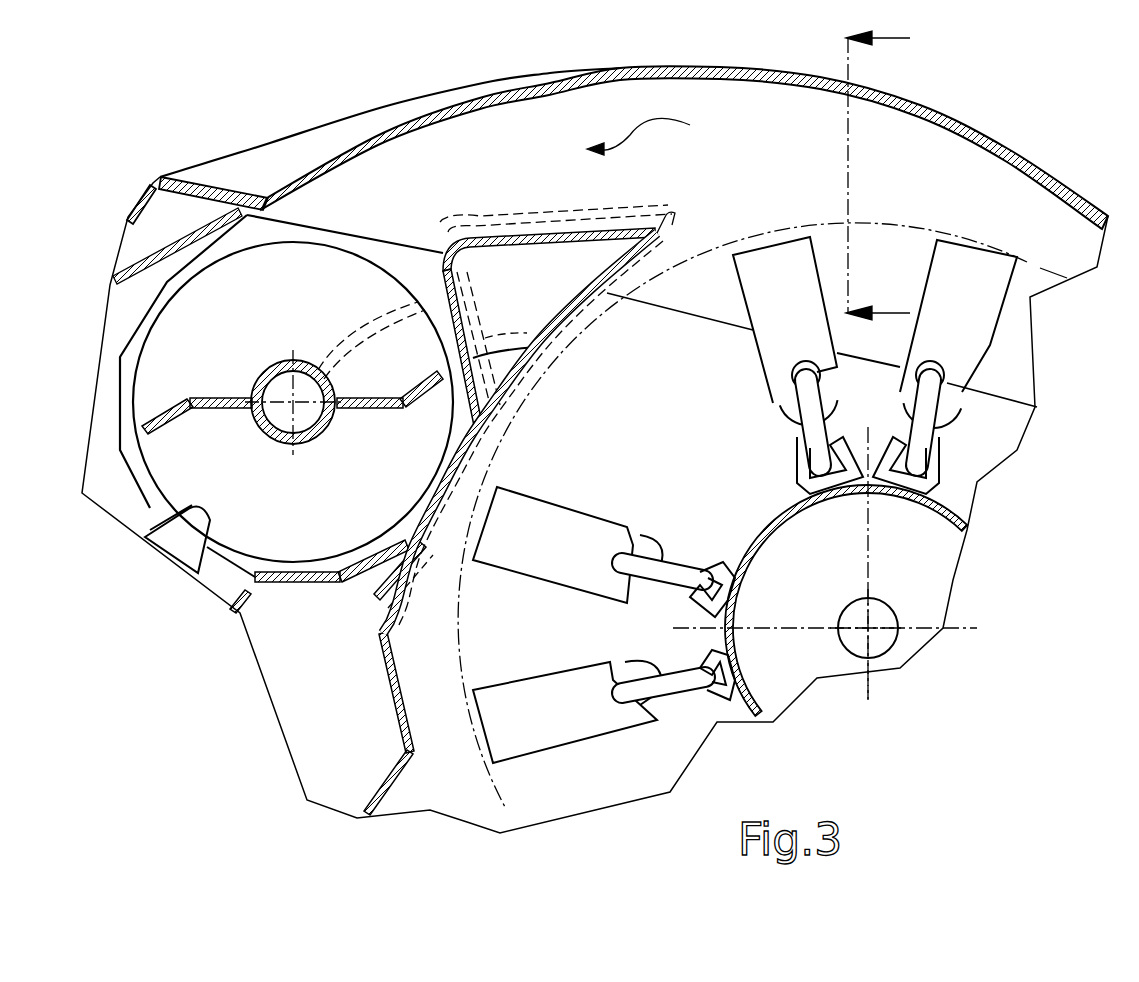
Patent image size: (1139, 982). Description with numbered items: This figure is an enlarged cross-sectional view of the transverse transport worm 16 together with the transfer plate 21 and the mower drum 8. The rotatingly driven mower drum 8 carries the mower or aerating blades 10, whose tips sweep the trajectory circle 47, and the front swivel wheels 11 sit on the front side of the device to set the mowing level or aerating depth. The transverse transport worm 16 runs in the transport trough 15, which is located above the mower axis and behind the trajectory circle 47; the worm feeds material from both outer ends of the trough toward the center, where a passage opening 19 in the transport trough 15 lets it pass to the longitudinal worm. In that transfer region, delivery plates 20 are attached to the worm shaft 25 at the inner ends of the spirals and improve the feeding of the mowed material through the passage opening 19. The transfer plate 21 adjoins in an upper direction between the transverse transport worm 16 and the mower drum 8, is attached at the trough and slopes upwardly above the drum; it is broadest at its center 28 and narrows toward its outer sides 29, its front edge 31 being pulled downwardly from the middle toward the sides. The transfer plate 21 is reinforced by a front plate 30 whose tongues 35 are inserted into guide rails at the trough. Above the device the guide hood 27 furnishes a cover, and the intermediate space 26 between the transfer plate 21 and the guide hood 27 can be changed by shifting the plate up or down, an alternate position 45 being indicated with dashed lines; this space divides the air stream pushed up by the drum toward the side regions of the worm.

The mower drum 8 is at (760, 703).
The mower blades or aerating blades 10 is at (548, 695).
The front swivel wheels 11 is at (880, 175).
The transport trough 15 is at (288, 582).
The transverse transport worm 16 is at (320, 278).
The passage opening 19 is at (148, 510).
The delivery plates 20 is at (212, 410).
The transfer plate 21 is at (490, 275).
The worm shaft 25 is at (270, 365).
The intermediate space 26 is at (656, 133).
The guide hood 27 is at (527, 80).
The center of the transfer plate 28 is at (688, 217).
The outer sides of the transfer plate 29 is at (533, 362).
The front plate 30 is at (517, 397).
The front edge of the transfer plate 31 is at (650, 257).
The tongues 35 is at (378, 605).
The alternate position of the transfer plate 45 is at (595, 215).
The trajectory circle 47 is at (520, 815).